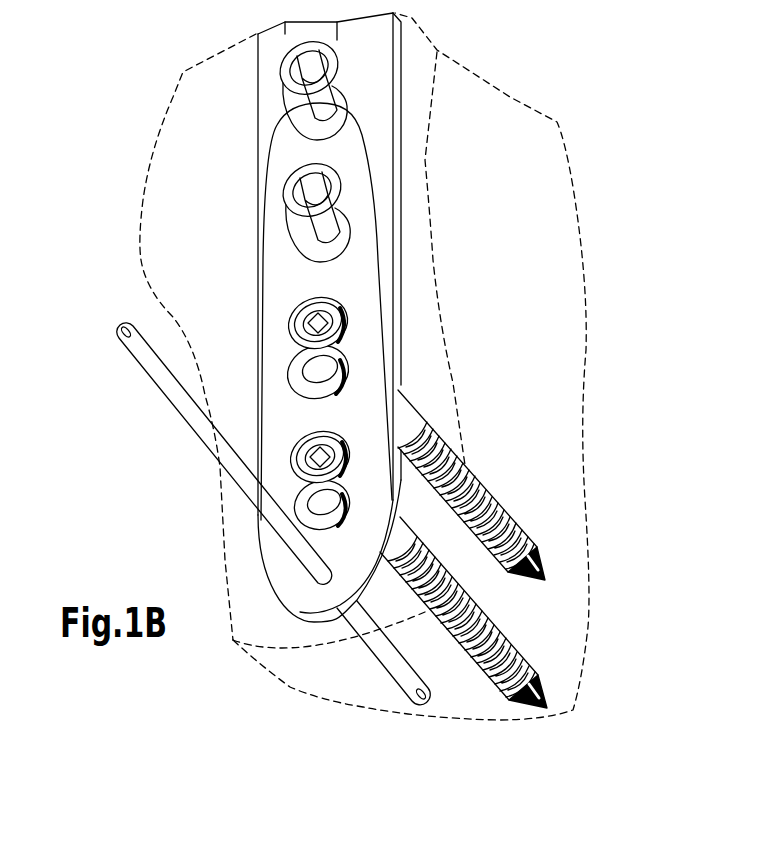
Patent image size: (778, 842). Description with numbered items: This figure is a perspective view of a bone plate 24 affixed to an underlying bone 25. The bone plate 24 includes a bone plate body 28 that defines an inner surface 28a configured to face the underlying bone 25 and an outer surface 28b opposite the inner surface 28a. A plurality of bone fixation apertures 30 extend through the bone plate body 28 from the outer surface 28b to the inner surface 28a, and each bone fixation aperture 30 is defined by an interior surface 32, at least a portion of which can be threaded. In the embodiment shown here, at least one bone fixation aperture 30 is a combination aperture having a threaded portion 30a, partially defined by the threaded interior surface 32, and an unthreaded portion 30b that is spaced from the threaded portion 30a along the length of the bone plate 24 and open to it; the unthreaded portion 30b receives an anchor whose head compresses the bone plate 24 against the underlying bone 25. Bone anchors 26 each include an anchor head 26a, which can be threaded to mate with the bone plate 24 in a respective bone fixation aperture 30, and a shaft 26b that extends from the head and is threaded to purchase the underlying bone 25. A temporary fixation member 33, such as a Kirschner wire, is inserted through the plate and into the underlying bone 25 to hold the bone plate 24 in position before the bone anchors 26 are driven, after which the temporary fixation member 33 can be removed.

The bone plate 24 is at (354, 354).
The underlying bone 25 is at (530, 453).
The bone anchor 26 is at (389, 565).
The anchor head 26a is at (297, 472).
The shaft 26b is at (450, 636).
The bone plate body 28 is at (363, 388).
The inner surface 28a is at (400, 293).
The outer surface 28b is at (258, 216).
The bone fixation aperture 30 is at (358, 428).
The threaded portion 30a is at (295, 317).
The unthreaded portion 30b is at (290, 375).
The interior surface 32 is at (340, 212).
The temporary fixation member 33 is at (152, 358).